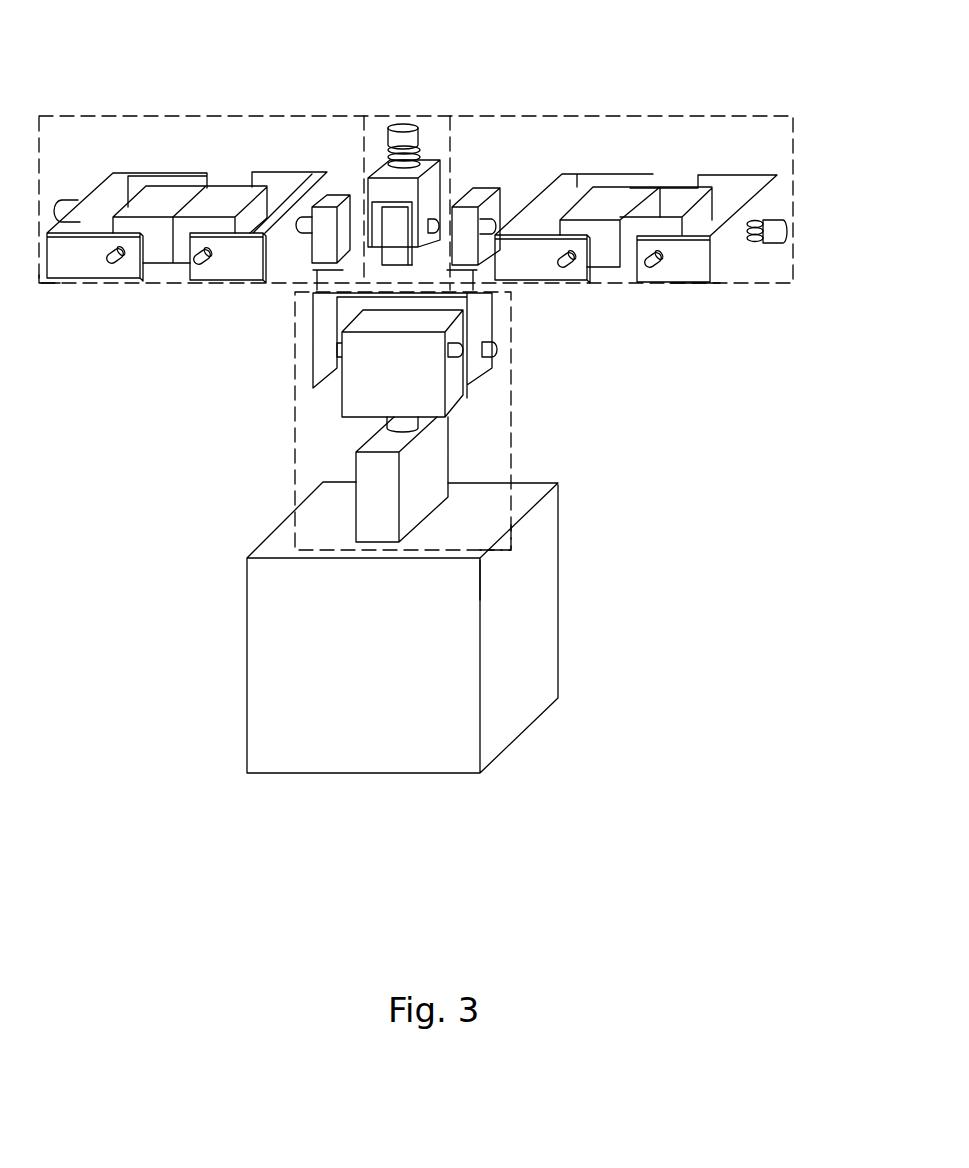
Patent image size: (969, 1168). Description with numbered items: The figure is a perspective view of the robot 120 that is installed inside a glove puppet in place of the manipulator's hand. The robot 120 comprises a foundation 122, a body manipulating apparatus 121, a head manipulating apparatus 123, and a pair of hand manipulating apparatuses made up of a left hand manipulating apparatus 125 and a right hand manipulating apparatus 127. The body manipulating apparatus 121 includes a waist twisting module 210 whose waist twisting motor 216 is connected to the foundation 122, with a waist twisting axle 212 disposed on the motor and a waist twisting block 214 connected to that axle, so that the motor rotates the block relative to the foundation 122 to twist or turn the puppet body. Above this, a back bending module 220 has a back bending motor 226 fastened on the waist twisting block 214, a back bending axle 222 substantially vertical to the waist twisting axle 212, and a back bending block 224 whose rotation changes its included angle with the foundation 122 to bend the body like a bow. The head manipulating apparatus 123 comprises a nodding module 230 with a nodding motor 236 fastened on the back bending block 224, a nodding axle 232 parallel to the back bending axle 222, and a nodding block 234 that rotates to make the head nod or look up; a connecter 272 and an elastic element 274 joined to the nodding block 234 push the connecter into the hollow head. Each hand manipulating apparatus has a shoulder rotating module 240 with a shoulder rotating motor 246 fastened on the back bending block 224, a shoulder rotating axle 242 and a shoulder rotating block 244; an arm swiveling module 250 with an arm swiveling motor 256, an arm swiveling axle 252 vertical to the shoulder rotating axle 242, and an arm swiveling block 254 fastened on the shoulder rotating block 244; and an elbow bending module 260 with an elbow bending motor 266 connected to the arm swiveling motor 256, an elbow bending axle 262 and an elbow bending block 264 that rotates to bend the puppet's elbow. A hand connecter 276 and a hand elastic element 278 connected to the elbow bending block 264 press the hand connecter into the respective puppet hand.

The robot 120 is at (125, 57).
The body manipulating apparatus 121 is at (512, 543).
The foundation 122 is at (537, 588).
The head manipulating apparatus 123 is at (368, 117).
The left hand manipulating apparatus 125 is at (689, 285).
The right hand manipulating apparatus 127 is at (41, 283).
The waist twisting module 210 is at (616, 428).
The waist twisting axle 212 is at (423, 430).
The waist twisting block 214 is at (402, 428).
The waist twisting motor 216 is at (433, 468).
The back bending module 220 is at (591, 320).
The back bending axle 222 is at (418, 368).
The back bending block 224 is at (425, 292).
The back bending motor 226 is at (457, 358).
The nodding module 230 is at (522, 78).
The nodding axle 232 is at (440, 225).
The nodding block 234 is at (399, 220).
The nodding motor 236 is at (412, 206).
The shoulder rotating module 240 is at (627, 88).
The shoulder rotating axle 242 is at (288, 281).
The shoulder rotating block 244 is at (270, 281).
The shoulder rotating motor 246 is at (303, 234).
The arm swiveling module 250 is at (722, 48).
The arm swiveling axle 252 is at (192, 281).
The arm swiveling block 254 is at (223, 281).
The arm swiveling motor 256 is at (182, 281).
The elbow bending module 260 is at (823, 86).
The elbow bending axle 262 is at (108, 281).
The elbow bending block 264 is at (83, 281).
The elbow bending motor 266 is at (150, 281).
The connecter 272 is at (405, 124).
The elastic element 274 is at (388, 158).
The hand connecter 276 is at (787, 232).
The hand elastic element 278 is at (755, 245).